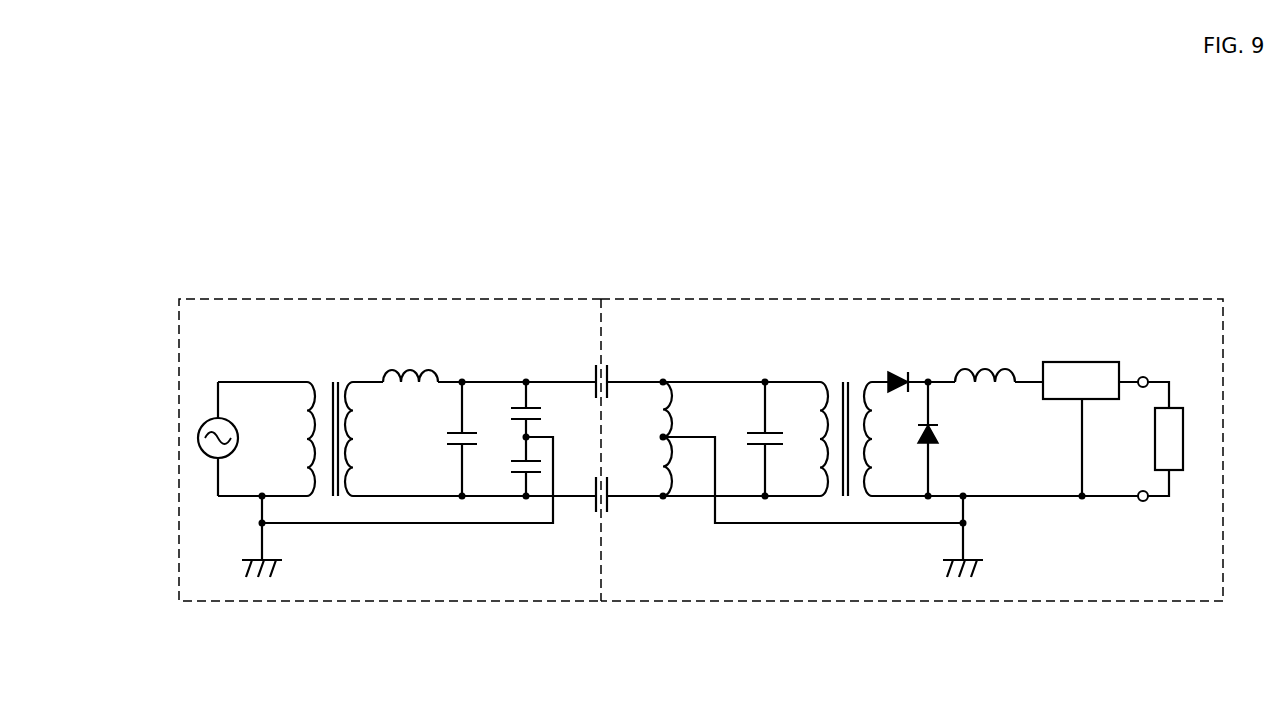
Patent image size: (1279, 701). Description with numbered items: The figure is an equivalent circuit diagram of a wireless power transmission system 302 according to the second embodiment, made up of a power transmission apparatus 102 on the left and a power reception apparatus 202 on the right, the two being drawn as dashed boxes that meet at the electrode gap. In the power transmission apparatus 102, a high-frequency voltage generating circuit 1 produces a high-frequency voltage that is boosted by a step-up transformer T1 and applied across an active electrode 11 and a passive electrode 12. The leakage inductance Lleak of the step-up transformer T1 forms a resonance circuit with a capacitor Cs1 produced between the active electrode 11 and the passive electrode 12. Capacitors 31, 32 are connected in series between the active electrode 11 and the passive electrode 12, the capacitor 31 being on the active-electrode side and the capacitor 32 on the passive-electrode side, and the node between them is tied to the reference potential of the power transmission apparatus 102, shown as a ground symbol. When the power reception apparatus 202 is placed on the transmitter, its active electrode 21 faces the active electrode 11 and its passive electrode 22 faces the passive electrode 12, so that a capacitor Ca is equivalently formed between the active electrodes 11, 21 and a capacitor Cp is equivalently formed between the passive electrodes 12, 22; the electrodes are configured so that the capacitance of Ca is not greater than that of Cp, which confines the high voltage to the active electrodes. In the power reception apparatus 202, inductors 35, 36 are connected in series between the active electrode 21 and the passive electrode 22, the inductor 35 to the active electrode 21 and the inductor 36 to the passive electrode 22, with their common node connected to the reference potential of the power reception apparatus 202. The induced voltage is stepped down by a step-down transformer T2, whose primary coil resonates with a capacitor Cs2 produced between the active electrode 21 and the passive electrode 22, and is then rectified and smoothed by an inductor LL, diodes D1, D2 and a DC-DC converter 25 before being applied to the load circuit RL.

The wireless power transmission system 302 is at (333, 185).
The power transmission apparatus 102 is at (185, 296).
The power reception apparatus 202 is at (1207, 296).
The high-frequency voltage generating circuit 1 is at (210, 417).
The active electrode 11 is at (593, 366).
The passive electrode 12 is at (593, 511).
The active electrode 21 is at (611, 366).
The passive electrode 22 is at (611, 511).
The capacitor 31 is at (519, 409).
The capacitor 32 is at (519, 466).
The inductor 35 is at (684, 409).
The inductor 36 is at (684, 466).
The DC-DC converter 25 is at (1052, 364).
The step-up transformer T1 is at (330, 424).
The step-down transformer T2 is at (846, 424).
The leakage inductance Lleak is at (410, 364).
The capacitor Cs1 is at (450, 426).
The capacitor Cs2 is at (756, 424).
The capacitor Ca is at (603, 382).
The capacitor Cp is at (606, 495).
The diode D1 is at (900, 369).
The diode D2 is at (943, 439).
The inductor LL is at (985, 362).
The load circuit RL is at (1178, 407).